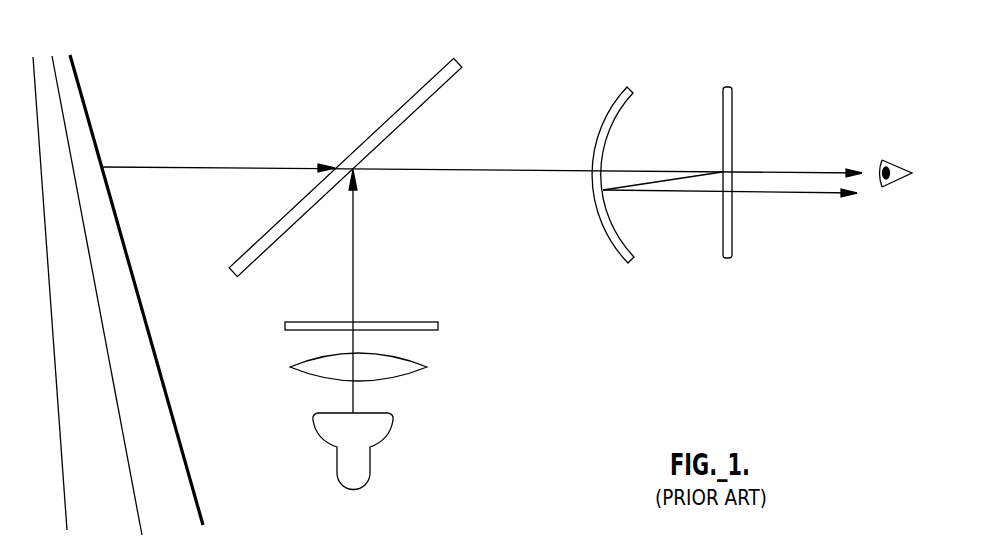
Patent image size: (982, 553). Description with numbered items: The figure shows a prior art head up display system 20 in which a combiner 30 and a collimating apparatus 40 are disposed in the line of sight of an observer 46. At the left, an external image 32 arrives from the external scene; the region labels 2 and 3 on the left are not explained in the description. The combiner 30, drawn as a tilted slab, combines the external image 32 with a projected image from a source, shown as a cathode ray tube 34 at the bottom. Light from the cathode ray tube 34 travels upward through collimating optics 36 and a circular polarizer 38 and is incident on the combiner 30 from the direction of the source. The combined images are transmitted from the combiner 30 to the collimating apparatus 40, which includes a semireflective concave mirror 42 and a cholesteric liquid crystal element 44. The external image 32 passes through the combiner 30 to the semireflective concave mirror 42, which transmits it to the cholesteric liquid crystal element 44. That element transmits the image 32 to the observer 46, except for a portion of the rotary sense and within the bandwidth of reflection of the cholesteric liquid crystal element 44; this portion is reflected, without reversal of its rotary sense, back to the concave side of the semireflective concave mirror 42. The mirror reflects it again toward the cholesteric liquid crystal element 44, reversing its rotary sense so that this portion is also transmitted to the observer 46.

The region 2 is at (97, 295).
The region 3 is at (59, 293).
The head up display system 20 is at (791, 57).
The combiner 30 is at (420, 88).
The external image 32 is at (88, 112).
The cathode ray tube 34 is at (393, 426).
The collimating optics 36 is at (425, 362).
The circular polarizer 38 is at (438, 327).
The collimating apparatus 40 is at (746, 305).
The semireflective concave mirror 42 is at (629, 92).
The cholesteric liquid crystal element 44 is at (727, 86).
The observer 46 is at (890, 166).